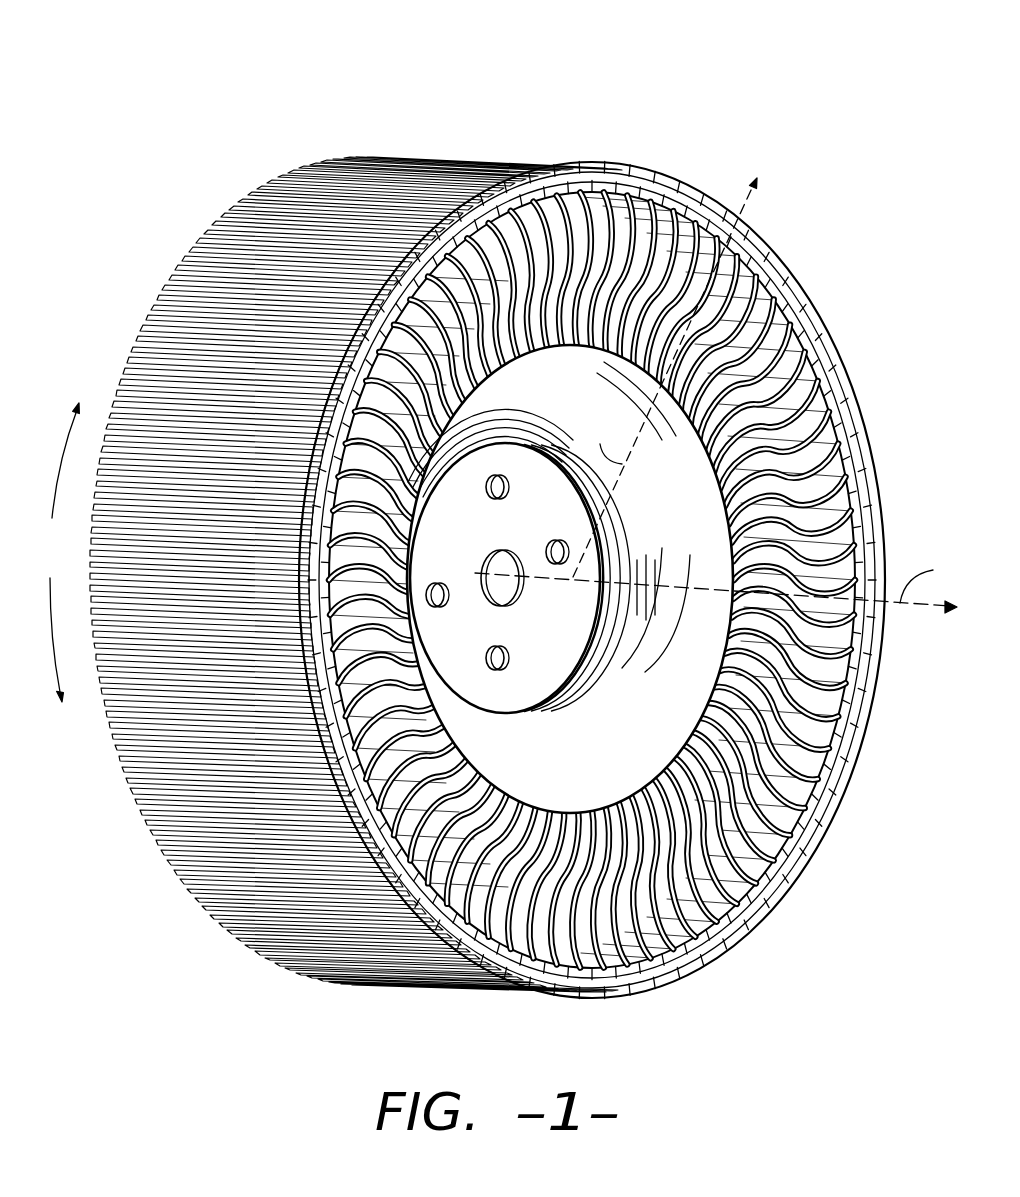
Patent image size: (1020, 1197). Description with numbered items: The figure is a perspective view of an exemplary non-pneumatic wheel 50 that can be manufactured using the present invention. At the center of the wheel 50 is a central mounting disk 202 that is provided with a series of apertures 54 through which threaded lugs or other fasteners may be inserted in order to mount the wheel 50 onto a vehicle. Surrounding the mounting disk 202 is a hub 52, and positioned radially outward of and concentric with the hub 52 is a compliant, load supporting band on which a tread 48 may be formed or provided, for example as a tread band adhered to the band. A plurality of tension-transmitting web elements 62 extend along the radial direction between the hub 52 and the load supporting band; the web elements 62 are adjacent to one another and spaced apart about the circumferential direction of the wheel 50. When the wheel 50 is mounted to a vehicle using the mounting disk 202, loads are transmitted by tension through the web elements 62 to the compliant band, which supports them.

The tread 48 is at (378, 152).
The non-pneumatic wheel 50 is at (738, 113).
The hub 52 is at (652, 563).
The apertures 54 is at (505, 481).
The tension-transmitting web elements 62 is at (584, 220).
The central mounting disk 202 is at (510, 680).